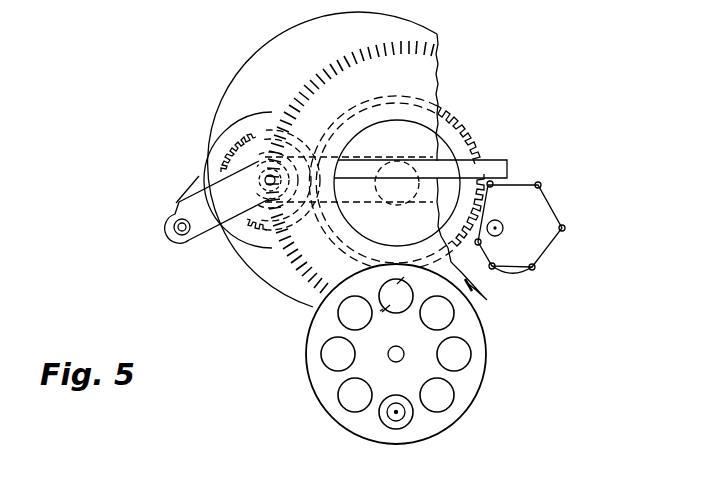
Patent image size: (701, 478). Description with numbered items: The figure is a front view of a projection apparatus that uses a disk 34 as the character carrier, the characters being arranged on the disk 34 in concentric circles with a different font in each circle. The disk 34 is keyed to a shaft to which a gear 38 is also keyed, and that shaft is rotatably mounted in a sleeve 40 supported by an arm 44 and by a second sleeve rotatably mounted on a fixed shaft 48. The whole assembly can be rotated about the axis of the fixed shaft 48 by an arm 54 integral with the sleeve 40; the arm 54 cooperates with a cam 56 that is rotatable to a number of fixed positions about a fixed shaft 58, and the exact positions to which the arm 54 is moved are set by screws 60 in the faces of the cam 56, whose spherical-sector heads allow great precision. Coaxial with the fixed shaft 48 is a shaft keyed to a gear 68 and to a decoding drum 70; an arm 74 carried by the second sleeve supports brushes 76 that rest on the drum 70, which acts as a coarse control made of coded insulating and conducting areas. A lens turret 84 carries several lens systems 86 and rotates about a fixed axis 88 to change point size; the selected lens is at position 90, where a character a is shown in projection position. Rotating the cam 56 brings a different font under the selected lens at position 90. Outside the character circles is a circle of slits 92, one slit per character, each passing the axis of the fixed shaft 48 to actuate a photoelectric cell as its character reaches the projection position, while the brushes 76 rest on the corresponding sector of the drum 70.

The disk 34 is at (420, 79).
The gear 38 is at (470, 135).
The sleeve 40 is at (425, 140).
The arm 44 is at (325, 255).
The fixed shaft 48 is at (253, 133).
The arm 54 is at (507, 164).
The cam 56 is at (545, 205).
The fixed shaft 58 is at (503, 228).
The screws 60 is at (534, 268).
The gear 68 is at (232, 153).
The decoding drum 70 is at (242, 118).
The arm 74 is at (176, 238).
The brushes 76 is at (187, 195).
The lens turret 84 is at (487, 325).
The lens systems 86 is at (352, 397).
The fixed axis 88 is at (404, 357).
The selected lens position 90 is at (402, 313).
The circle of slits 92 is at (322, 70).